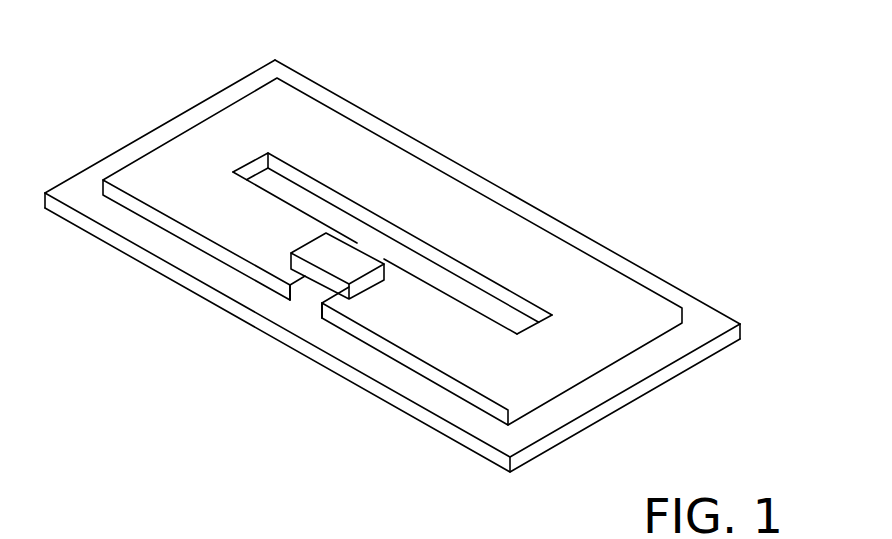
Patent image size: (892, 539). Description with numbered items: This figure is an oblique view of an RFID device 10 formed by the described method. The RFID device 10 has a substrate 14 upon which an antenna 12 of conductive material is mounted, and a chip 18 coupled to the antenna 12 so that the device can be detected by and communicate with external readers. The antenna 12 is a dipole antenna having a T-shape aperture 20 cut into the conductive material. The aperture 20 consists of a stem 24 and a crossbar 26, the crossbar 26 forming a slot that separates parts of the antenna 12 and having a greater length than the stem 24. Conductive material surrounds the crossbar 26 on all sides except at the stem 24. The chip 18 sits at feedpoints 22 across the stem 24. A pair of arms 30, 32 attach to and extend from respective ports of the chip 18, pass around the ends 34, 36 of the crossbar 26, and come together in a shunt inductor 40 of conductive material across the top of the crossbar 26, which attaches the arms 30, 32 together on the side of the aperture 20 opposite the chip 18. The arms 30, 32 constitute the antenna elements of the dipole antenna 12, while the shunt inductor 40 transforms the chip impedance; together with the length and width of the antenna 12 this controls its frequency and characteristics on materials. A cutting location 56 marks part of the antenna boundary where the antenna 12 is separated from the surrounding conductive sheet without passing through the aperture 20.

The RFID device 10 is at (247, 52).
The antenna 12 is at (194, 101).
The substrate 14 is at (561, 442).
The chip 18 is at (357, 260).
The T-shape aperture 20 is at (307, 163).
The feedpoints 22 is at (289, 277).
The stem 24 is at (308, 300).
The crossbar 26 is at (340, 218).
The arm 30 is at (165, 188).
The arm 32 is at (502, 383).
The end of aperture crossbar 34 is at (250, 167).
The end of aperture crossbar 36 is at (520, 323).
The shunt inductor 40 is at (425, 170).
The cutting location 56 is at (597, 253).